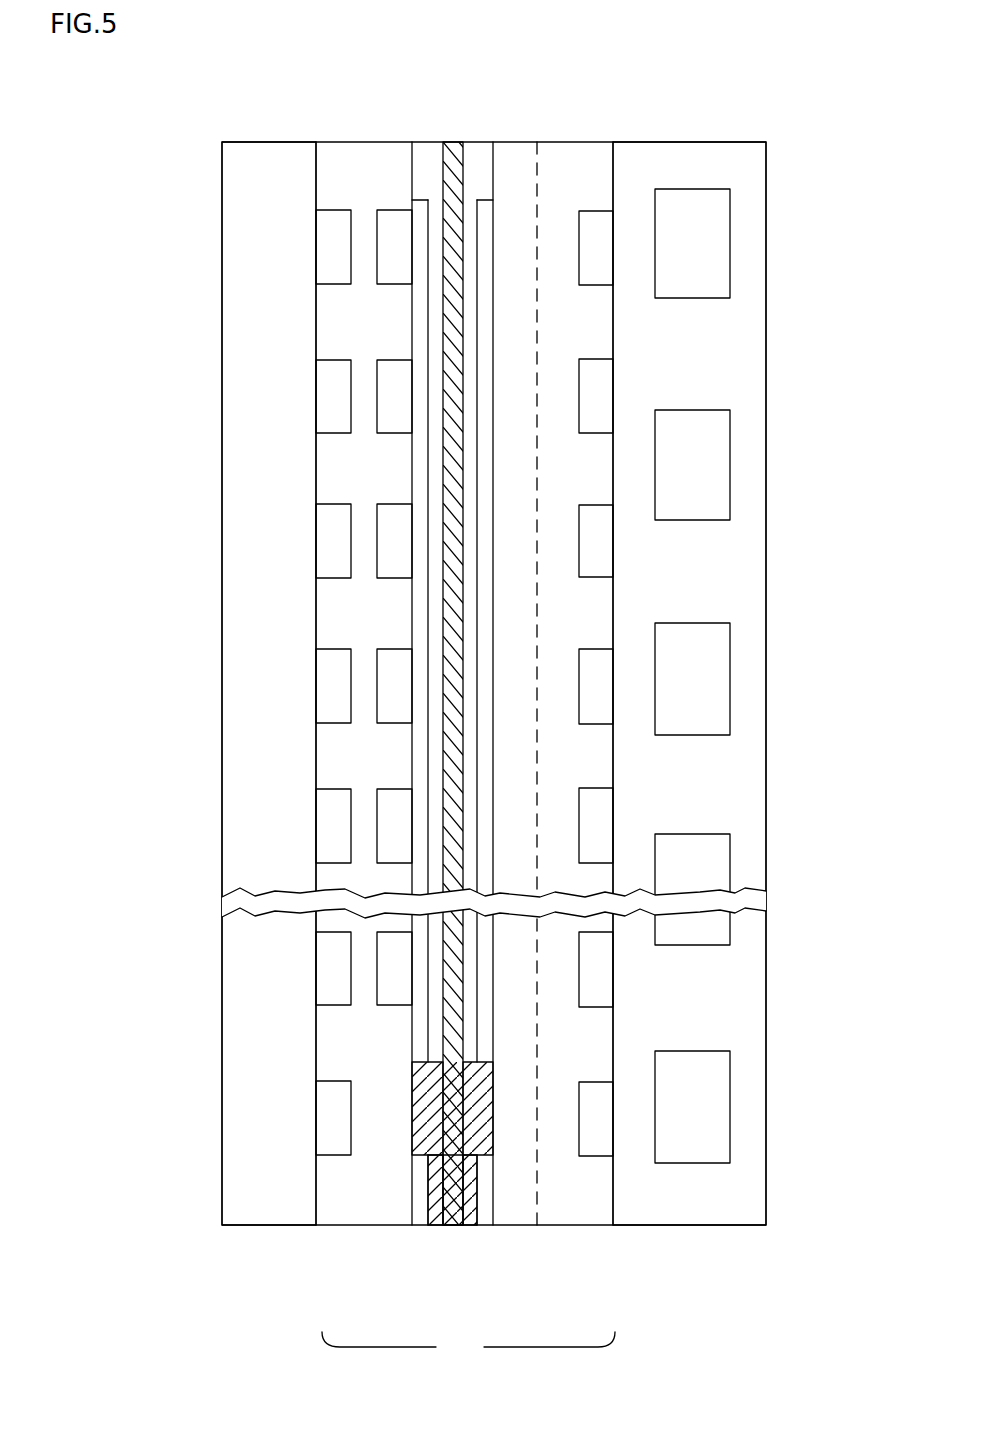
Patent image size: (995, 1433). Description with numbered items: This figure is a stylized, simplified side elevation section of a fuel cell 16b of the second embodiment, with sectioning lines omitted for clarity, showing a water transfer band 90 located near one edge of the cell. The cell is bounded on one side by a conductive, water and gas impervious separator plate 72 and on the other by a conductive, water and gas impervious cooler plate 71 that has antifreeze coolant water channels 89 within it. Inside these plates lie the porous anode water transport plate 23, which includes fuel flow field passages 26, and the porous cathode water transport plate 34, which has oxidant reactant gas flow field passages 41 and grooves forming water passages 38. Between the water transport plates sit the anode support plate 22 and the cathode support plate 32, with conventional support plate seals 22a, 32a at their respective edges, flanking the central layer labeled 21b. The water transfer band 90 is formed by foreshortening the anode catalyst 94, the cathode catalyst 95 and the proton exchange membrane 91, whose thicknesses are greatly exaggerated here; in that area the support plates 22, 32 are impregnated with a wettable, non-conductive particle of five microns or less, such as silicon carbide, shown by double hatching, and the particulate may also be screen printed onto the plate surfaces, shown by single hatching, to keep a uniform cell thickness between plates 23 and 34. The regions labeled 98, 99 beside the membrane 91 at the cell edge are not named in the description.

The fuel cell 16b is at (468, 1346).
The piezoelectric layer 21b is at (473, 141).
The anode support plate 22 is at (421, 1030).
The support plate seal 22a is at (417, 142).
The anode water transport plate 23 is at (338, 140).
The fuel flow field passages 26 is at (397, 417).
The cathode support plate 32 is at (483, 1030).
The support plate seal 32a is at (486, 142).
The cathode water transport plate 34 is at (588, 140).
The water passages 38 is at (332, 275).
The oxidant reactant gas flow field passages 41 is at (536, 148).
The cooler plate 71 is at (708, 175).
The separator plate 72 is at (282, 216).
The antifreeze coolant water channels 89 is at (703, 283).
The water transfer band 90 is at (391, 1184).
The proton exchange membrane 91 is at (449, 1217).
The anode catalyst 94 is at (432, 1048).
The cathode catalyst 95 is at (472, 1048).
The first lower electrode portion 98 is at (436, 1217).
The second lower electrode portion 99 is at (463, 1217).